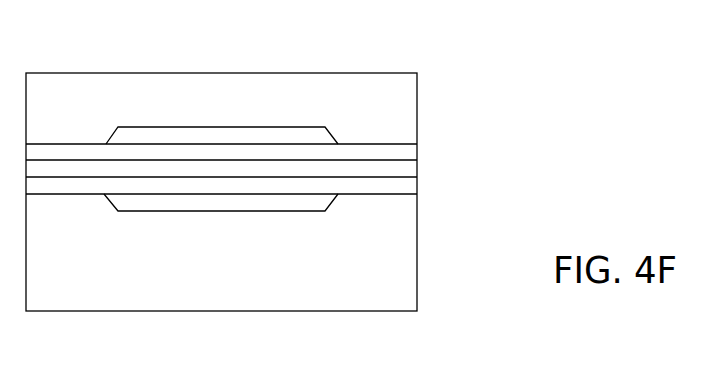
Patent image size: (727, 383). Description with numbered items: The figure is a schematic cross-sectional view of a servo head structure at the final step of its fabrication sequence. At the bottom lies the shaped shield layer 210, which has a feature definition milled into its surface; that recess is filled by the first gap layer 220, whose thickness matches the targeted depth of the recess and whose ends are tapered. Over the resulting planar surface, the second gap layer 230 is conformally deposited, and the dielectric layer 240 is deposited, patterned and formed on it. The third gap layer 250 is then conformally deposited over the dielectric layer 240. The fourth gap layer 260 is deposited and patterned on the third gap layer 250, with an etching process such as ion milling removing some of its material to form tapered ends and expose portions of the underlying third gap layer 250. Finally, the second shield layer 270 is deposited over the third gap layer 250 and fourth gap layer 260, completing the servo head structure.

The shaped shield layer 210 is at (240, 272).
The first gap layer 220 is at (137, 204).
The second gap layer 230 is at (408, 187).
The dielectric layer 240 is at (408, 168).
The third gap layer 250 is at (410, 152).
The fourth gap layer 260 is at (184, 136).
The second shield layer 270 is at (293, 73).